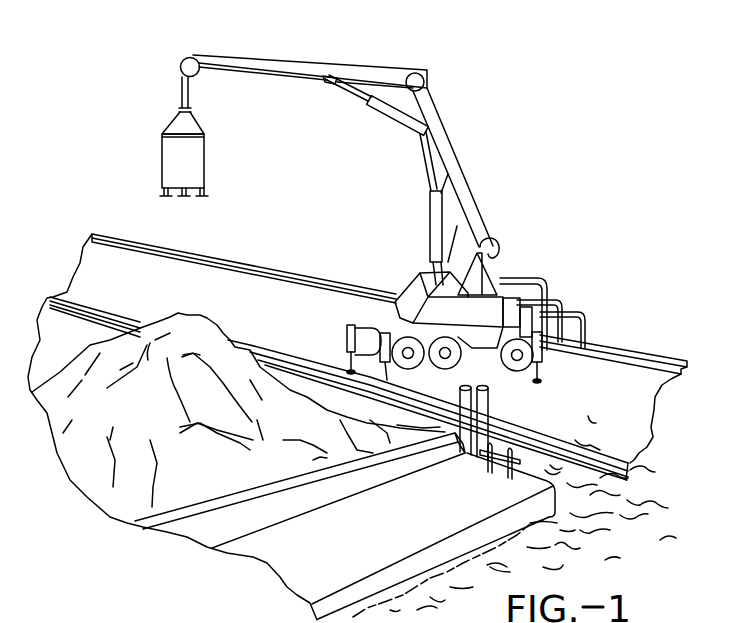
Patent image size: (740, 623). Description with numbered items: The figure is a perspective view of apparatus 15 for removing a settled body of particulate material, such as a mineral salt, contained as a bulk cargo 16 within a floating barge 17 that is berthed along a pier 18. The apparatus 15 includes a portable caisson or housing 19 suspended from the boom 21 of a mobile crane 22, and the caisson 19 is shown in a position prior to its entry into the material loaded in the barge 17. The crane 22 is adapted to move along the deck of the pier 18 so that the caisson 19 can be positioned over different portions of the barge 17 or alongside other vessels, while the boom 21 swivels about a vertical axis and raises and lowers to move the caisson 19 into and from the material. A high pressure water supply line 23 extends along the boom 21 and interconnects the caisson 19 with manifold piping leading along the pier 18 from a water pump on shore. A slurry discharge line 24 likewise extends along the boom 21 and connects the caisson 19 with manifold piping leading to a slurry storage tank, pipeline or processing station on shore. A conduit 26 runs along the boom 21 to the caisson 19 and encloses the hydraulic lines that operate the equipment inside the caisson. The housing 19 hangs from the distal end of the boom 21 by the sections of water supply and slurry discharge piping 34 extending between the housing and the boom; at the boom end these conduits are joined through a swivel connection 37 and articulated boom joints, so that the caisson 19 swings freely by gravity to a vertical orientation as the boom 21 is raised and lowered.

The apparatus 15 is at (160, 89).
The bulk cargo 16 is at (212, 340).
The barge 17 is at (568, 547).
The pier 18 is at (627, 380).
The caisson 19 is at (154, 165).
The boom 21 is at (310, 67).
The mobile crane 22 is at (401, 277).
The high pressure water supply line 23 is at (528, 279).
The slurry discharge line 24 is at (558, 300).
The conduit 26 is at (585, 323).
The water supply and slurry discharge piping 34 is at (192, 93).
The pivot 37 is at (189, 56).